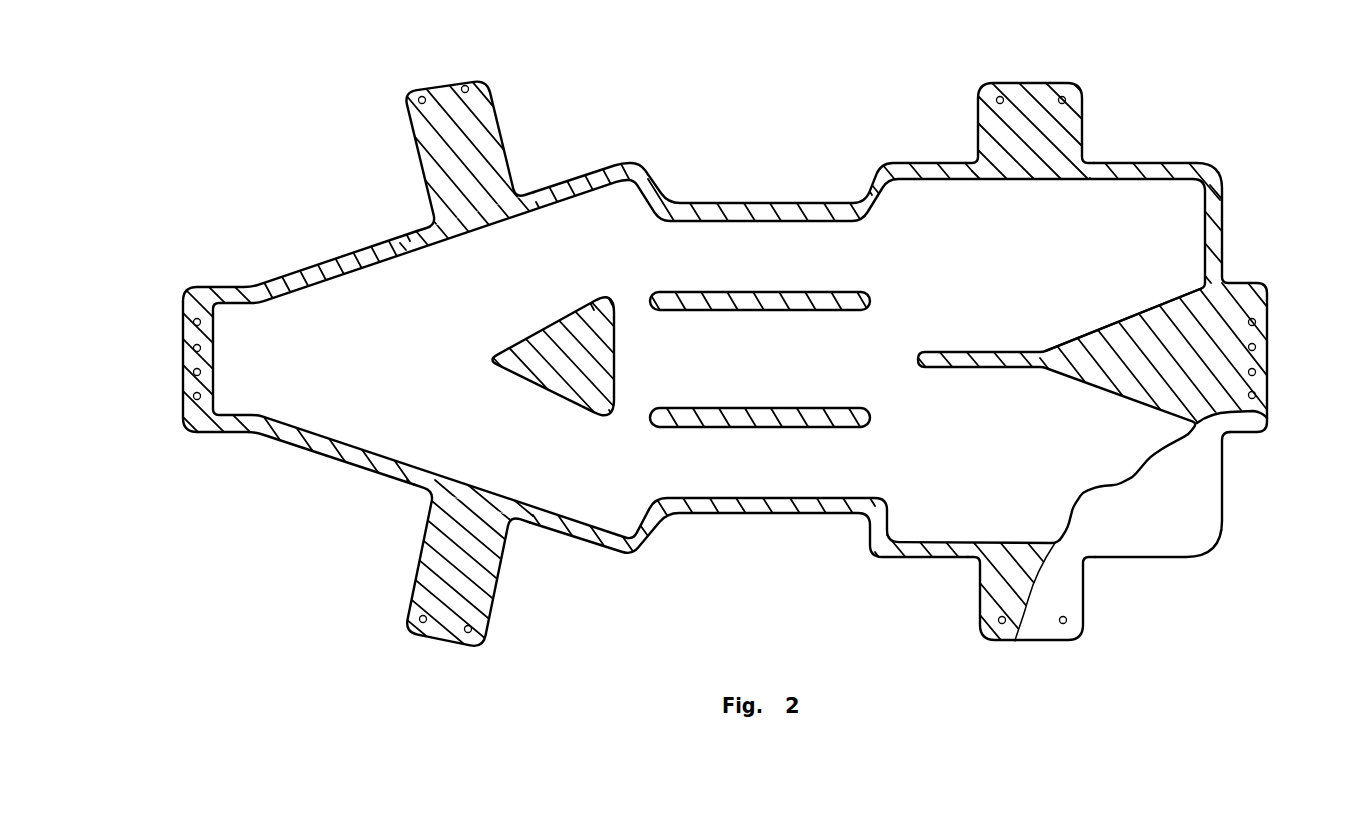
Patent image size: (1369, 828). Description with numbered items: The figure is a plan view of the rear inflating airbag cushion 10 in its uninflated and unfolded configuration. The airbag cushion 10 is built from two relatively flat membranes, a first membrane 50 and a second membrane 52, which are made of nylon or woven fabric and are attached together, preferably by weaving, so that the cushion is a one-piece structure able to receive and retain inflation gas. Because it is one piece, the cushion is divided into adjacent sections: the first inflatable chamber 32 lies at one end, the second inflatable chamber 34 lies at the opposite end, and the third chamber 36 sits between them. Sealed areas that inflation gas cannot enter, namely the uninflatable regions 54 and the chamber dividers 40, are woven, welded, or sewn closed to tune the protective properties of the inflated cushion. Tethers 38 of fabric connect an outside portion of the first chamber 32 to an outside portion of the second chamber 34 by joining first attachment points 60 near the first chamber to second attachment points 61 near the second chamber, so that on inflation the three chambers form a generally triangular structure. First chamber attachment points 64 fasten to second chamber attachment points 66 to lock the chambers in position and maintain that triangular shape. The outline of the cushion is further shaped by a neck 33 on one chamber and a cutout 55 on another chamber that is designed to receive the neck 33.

The rear inflating airbag cushion 10 is at (286, 168).
The first inflatable chamber 32 is at (709, 361).
The neck 33 is at (258, 322).
The second inflatable chamber 34 is at (971, 281).
The third chamber 36 is at (714, 363).
The tether 38 is at (437, 80).
The chamber divider 40 is at (703, 292).
The first membrane 50 is at (1200, 510).
The second membrane 52 is at (1143, 442).
The uninflatable region 54 is at (580, 178).
The cutout 55 is at (1068, 350).
The first attachment point 60 is at (467, 88).
The second attachment point 61 is at (998, 97).
The first chamber attachment point 64 is at (192, 395).
The second chamber attachment point 66 is at (1258, 323).